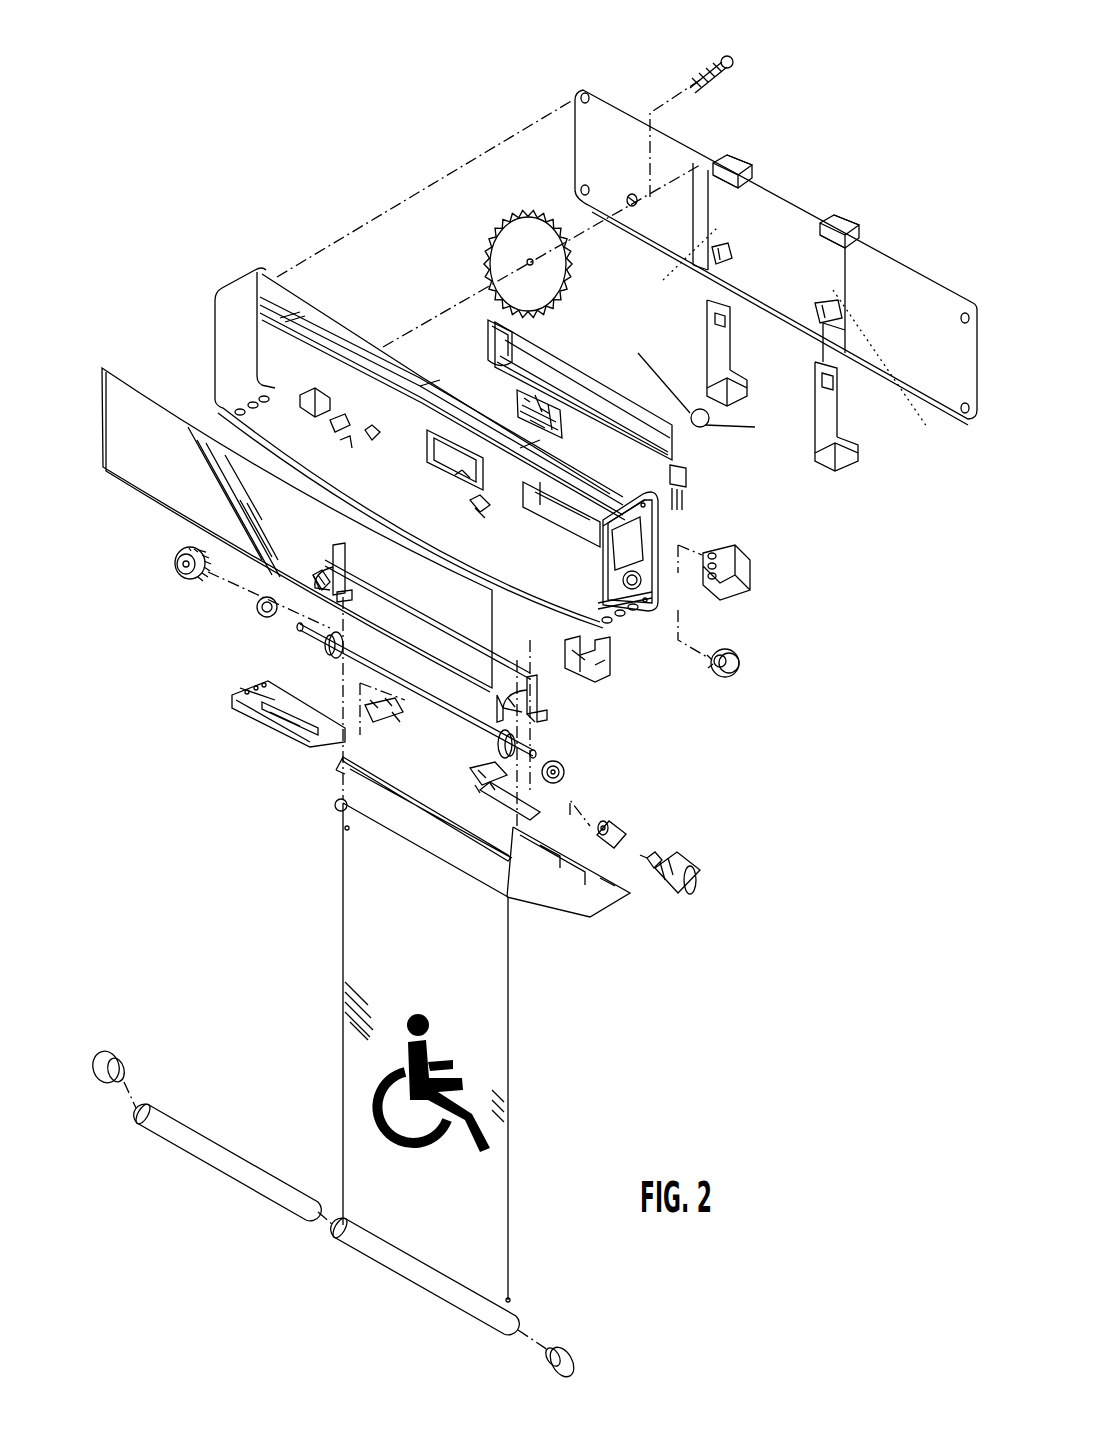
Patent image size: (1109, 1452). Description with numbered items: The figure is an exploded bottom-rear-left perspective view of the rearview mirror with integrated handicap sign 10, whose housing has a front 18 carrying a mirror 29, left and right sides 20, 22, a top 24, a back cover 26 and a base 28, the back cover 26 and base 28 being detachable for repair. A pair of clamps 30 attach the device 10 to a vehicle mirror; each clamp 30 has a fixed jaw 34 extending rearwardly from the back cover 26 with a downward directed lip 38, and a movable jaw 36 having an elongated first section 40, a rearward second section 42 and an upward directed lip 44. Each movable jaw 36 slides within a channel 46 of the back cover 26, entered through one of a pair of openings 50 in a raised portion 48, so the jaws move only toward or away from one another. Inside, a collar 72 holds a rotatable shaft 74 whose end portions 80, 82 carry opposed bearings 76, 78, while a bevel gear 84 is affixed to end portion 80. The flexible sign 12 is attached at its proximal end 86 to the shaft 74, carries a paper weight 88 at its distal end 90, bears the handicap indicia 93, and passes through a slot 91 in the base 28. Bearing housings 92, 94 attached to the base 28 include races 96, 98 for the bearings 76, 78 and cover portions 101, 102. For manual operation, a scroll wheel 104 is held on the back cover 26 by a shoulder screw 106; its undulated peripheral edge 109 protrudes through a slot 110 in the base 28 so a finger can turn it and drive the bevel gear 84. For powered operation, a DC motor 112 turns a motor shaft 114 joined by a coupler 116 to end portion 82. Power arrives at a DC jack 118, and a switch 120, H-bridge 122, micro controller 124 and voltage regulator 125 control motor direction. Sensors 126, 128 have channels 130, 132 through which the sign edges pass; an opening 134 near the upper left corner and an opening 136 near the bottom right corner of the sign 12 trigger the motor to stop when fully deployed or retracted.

The rearview mirror with integrated handicap sign 10 is at (245, 130).
The sign 12 is at (489, 1169).
The front 18 is at (307, 450).
The left side 20 is at (218, 313).
The right side 22 is at (662, 532).
The top 24 is at (327, 310).
The back cover 26 is at (895, 278).
The base 28 is at (567, 903).
The mirror 29 is at (143, 500).
The clamp 30 is at (745, 140).
The fixed jaw 34 is at (750, 160).
The movable jaw 36 is at (696, 403).
The downward directed lip 38 is at (745, 170).
The first section 40 is at (709, 348).
The second section 42 is at (733, 390).
The upward directed lip 44 is at (742, 383).
The channel 46 is at (793, 338).
The raised portion 48 is at (793, 240).
The opening 50 is at (717, 263).
The collar 72 is at (532, 355).
The shaft 74 is at (390, 672).
The bearing 76 is at (257, 613).
The bearing 78 is at (565, 772).
The end portion 80 is at (310, 623).
The end portion 82 is at (530, 750).
The bevel gear 84 is at (185, 578).
The proximal end 86 is at (430, 857).
The paper weight 88 is at (219, 1169).
The distal end 90 is at (422, 1272).
The slot 91 is at (433, 808).
The bearing housing 92 is at (350, 570).
The indicia 93 is at (384, 1080).
The bearing housing 94 is at (542, 689).
The race 96 is at (315, 597).
The race 98 is at (513, 700).
The cover portion 101 is at (317, 573).
The cover portion 102 is at (507, 683).
The scroll wheel 104 is at (487, 254).
The shoulder screw 106 is at (725, 60).
The undulated peripheral edge 109 is at (497, 217).
The slot 110 is at (293, 716).
The DC motor 112 is at (690, 867).
The motor shaft 114 is at (653, 860).
The coupler 116 is at (617, 823).
The DC jack 118 is at (742, 663).
The switch 120 is at (750, 577).
The H-bridge 122 is at (610, 677).
The micro controller 124 is at (515, 400).
The voltage regulator 125 is at (688, 480).
The sensor 126 is at (367, 712).
The sensor 128 is at (487, 783).
The channel 130 is at (393, 727).
The channel 132 is at (483, 767).
The opening 134 is at (347, 828).
The opening 136 is at (504, 1298).